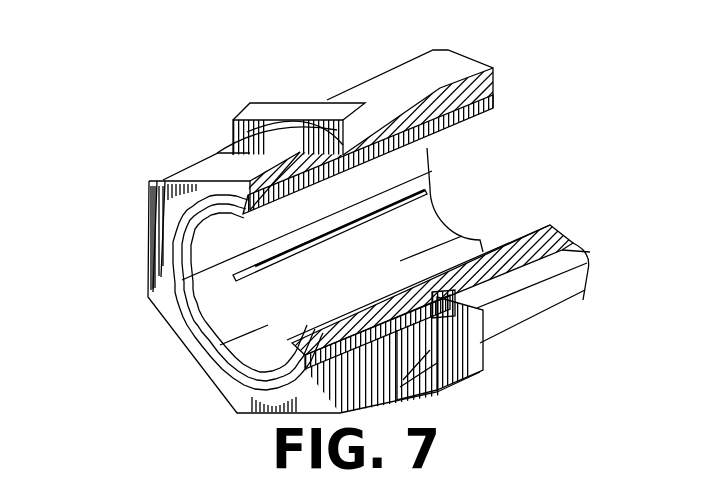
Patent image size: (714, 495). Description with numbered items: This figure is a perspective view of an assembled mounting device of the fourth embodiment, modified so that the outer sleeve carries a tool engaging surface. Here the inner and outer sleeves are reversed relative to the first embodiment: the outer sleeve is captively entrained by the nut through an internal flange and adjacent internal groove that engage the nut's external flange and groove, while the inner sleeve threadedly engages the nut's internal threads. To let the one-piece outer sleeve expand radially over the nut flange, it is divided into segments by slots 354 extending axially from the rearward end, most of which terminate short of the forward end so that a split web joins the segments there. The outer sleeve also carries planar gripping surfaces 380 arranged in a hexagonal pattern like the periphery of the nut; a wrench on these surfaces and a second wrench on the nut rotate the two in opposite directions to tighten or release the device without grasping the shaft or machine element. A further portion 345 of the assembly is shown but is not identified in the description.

The end face 345 is at (215, 172).
The slots 354 is at (537, 283).
The gripping surfaces 380 is at (455, 367).